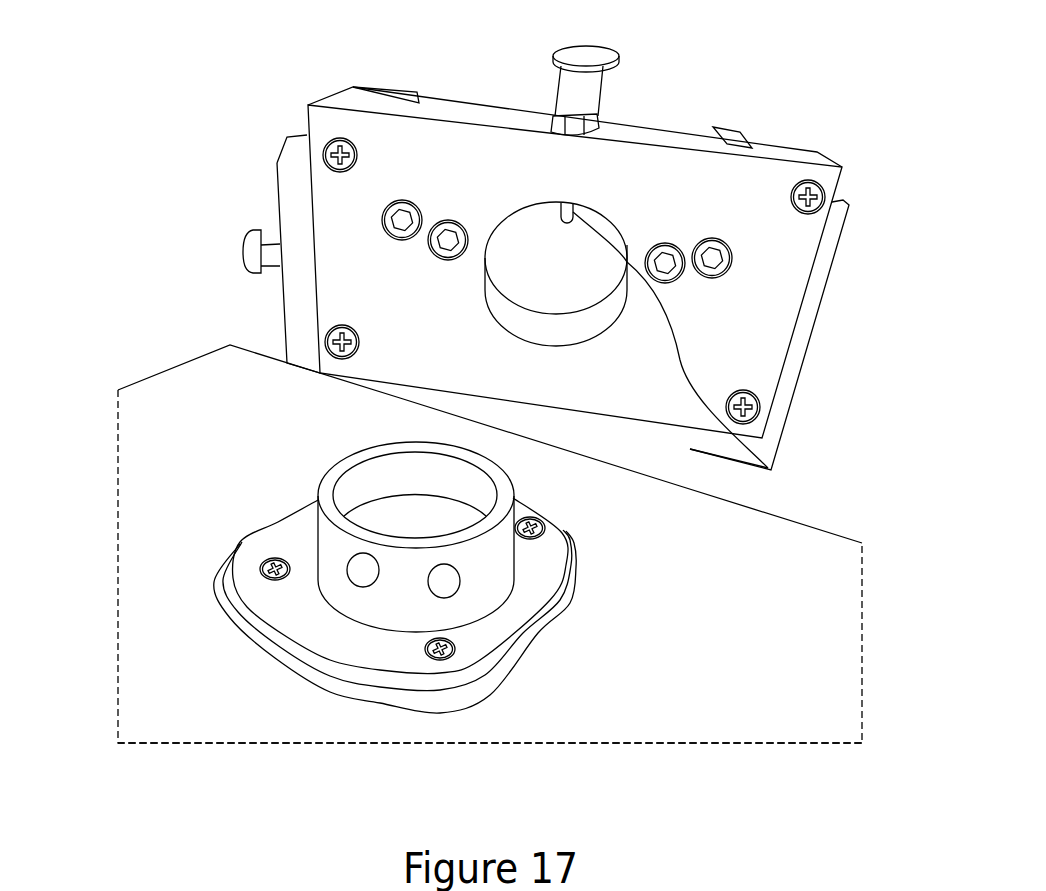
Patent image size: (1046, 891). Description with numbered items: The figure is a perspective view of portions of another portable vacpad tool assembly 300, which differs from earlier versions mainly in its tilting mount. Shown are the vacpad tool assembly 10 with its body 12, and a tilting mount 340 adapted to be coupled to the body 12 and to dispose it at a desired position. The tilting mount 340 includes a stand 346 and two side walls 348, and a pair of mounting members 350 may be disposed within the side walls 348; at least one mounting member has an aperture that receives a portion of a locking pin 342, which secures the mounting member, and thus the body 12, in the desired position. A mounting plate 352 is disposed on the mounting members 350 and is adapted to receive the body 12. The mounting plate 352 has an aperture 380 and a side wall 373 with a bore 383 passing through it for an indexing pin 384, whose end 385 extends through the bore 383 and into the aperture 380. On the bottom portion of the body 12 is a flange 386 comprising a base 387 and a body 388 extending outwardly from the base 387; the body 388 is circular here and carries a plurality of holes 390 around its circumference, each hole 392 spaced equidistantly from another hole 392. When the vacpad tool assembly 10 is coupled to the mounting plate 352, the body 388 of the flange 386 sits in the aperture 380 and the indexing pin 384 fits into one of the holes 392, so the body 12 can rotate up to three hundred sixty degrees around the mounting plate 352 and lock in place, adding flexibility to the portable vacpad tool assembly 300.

The vacpad tool assembly 10 is at (836, 643).
The body 12 is at (847, 607).
The portable vacpad tool assembly 300 is at (567, 254).
The tilting mount 340 is at (545, 254).
The locking pin 342 is at (245, 248).
The stand 346 is at (783, 427).
The side walls 348 is at (278, 205).
The mounting members 350 is at (393, 96).
The mounting plate 352 is at (797, 174).
The side wall 373 is at (443, 140).
The aperture 380 is at (483, 268).
The bore 383 is at (625, 140).
The indexing pin 384 is at (588, 46).
The end 385 is at (762, 456).
The flange 386 is at (386, 565).
The base 387 is at (307, 600).
The body 388 is at (490, 593).
The plurality of holes 390 is at (403, 648).
The hole 392 is at (320, 476).